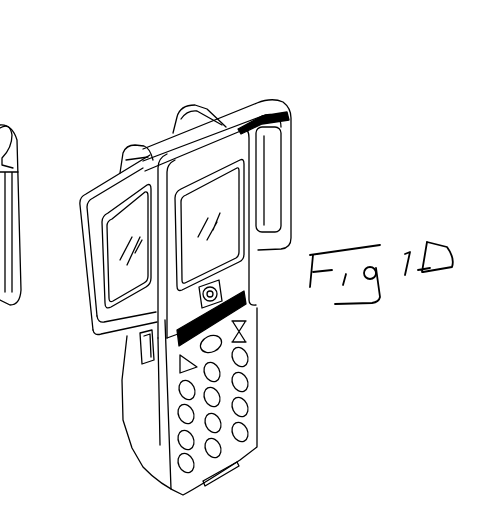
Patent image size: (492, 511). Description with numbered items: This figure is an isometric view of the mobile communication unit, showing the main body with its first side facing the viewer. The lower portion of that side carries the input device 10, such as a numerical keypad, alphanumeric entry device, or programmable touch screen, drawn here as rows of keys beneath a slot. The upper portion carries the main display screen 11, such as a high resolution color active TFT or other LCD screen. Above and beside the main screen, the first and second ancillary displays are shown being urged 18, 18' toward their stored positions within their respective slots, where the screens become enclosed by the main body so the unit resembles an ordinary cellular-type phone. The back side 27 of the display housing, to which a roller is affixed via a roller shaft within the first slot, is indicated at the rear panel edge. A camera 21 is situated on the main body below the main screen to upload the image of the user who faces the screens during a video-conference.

The input device 10 is at (273, 430).
The main display screen 11 is at (220, 243).
The urging of first ancillary display to stored position 18 is at (108, 213).
The urging of second ancillary display to stored position 18' is at (217, 170).
The camera 21 is at (224, 289).
The back side of display housing 27 is at (77, 237).